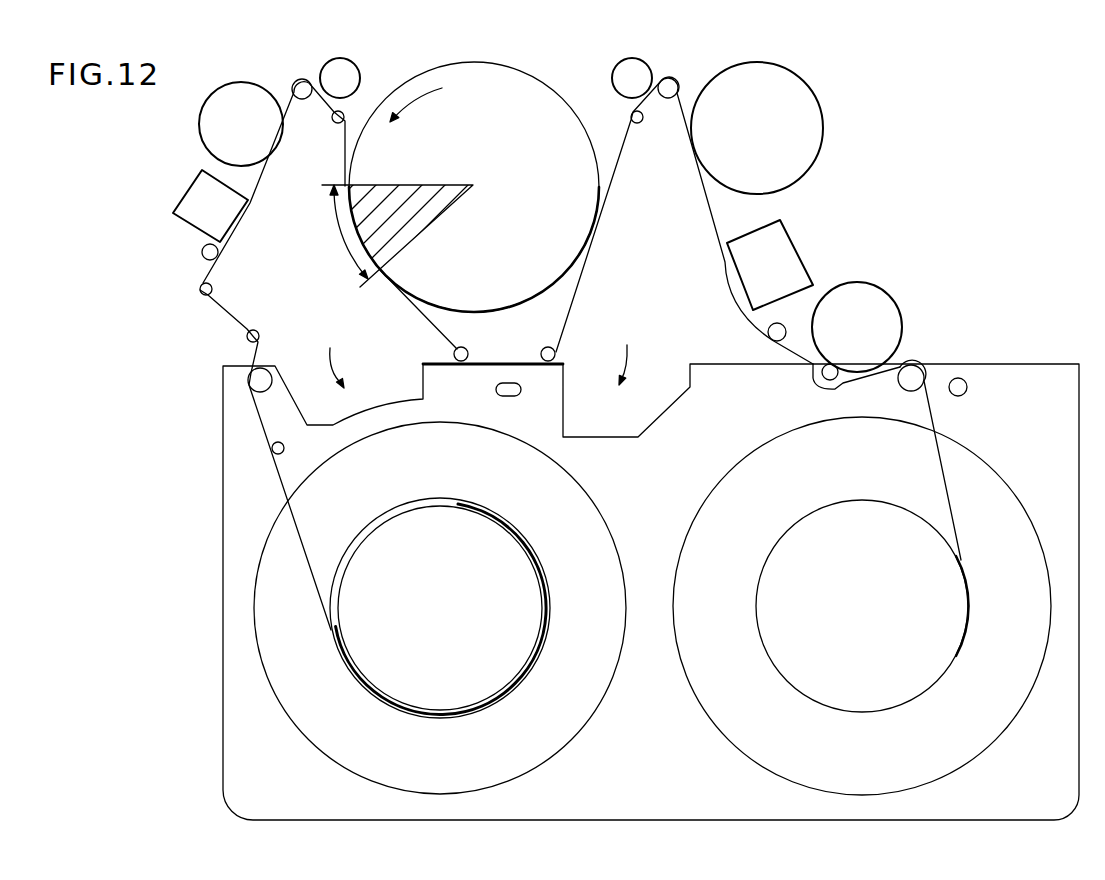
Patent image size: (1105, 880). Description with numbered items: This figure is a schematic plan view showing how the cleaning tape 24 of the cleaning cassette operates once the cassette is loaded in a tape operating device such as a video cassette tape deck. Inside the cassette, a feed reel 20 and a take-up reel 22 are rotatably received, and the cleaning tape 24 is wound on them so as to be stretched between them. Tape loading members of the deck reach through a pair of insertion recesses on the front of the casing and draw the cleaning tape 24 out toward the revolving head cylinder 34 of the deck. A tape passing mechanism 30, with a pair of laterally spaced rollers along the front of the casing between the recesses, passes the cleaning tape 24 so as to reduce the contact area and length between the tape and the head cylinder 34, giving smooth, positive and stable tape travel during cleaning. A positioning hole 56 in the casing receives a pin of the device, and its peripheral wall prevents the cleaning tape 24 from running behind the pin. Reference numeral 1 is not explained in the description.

The tape cassette 1 is at (1067, 780).
The feed reel 20 is at (538, 640).
The take-up reel 22 is at (755, 619).
The cleaning tape 24 is at (606, 199).
The tape passing mechanism 30 is at (503, 360).
The revolving head cylinder 34 is at (575, 114).
The positioning hole 56 is at (516, 394).